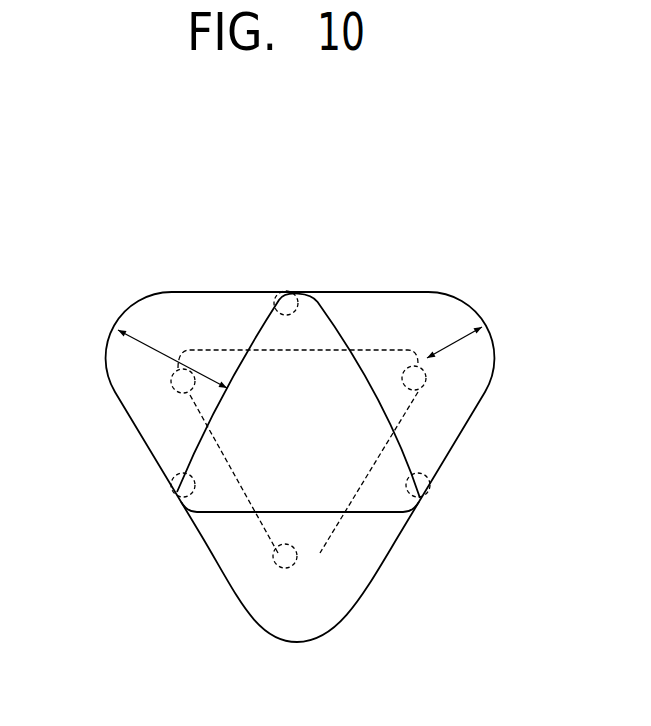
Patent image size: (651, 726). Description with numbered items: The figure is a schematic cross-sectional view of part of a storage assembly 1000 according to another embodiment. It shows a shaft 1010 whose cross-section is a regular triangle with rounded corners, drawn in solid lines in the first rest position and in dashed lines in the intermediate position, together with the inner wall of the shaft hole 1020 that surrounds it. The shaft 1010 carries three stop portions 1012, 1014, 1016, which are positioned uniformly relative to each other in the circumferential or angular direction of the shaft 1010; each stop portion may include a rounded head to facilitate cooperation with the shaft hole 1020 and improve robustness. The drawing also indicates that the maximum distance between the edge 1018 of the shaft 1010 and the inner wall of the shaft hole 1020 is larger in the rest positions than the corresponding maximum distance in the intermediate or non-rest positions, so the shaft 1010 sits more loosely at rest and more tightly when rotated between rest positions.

The storage assembly 1000 is at (401, 211).
The shaft 1010 is at (302, 430).
The stop portion 1012 is at (272, 292).
The stop portion 1014 is at (424, 389).
The stop portion 1016 is at (174, 476).
The edge 1018 is at (199, 447).
The shaft hole 1020 is at (212, 291).